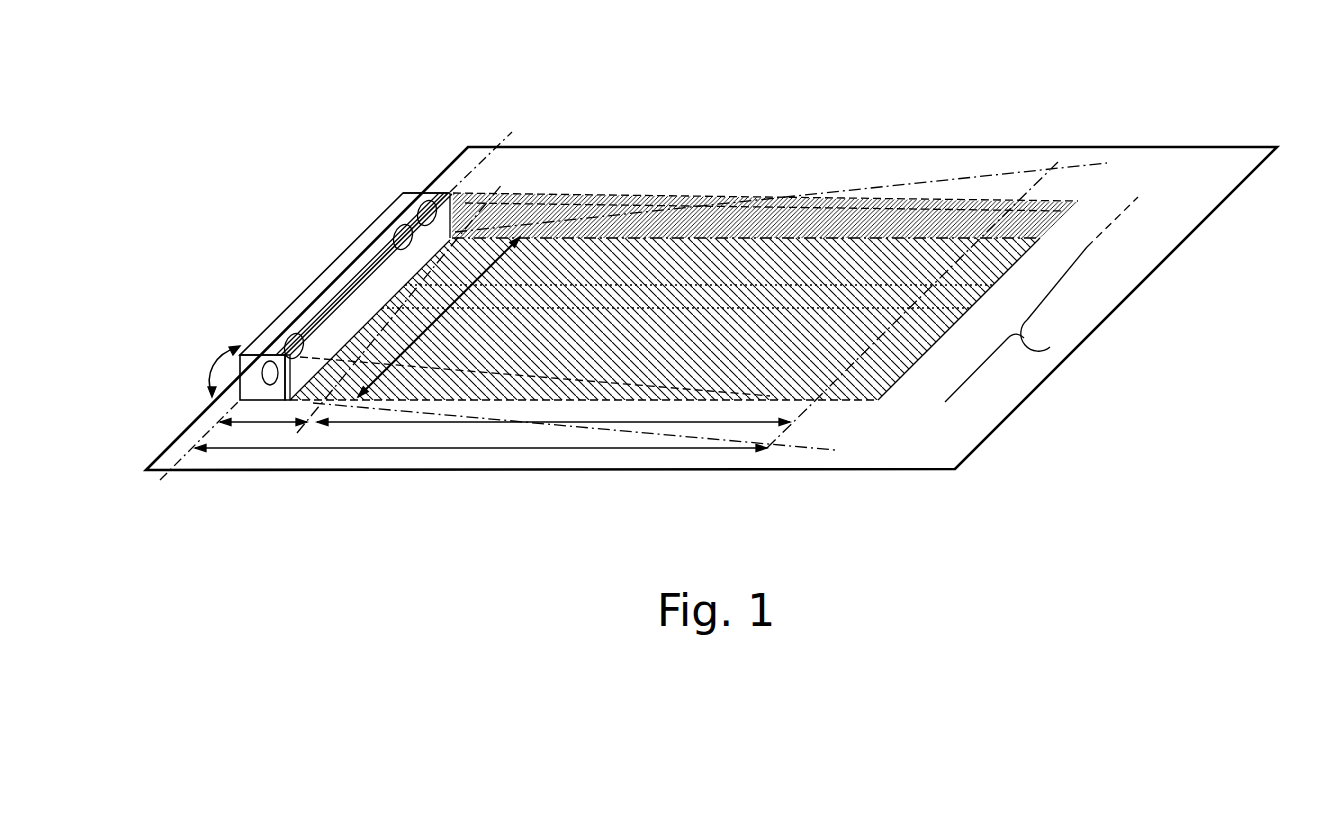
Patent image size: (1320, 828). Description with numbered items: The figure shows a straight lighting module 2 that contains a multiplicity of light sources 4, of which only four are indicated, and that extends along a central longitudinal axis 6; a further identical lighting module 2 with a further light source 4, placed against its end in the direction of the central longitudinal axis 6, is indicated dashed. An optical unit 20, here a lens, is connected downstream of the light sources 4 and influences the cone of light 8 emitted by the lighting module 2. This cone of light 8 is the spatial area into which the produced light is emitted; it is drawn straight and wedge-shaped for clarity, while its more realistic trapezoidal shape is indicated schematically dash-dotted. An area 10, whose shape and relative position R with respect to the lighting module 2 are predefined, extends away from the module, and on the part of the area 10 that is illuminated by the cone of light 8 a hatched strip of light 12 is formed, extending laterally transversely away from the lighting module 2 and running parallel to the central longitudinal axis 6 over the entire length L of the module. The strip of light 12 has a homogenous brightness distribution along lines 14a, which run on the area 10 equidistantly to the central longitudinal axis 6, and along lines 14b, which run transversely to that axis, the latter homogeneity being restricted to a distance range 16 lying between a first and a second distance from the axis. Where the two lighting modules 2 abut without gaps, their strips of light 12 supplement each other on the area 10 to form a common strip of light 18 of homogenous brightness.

The lighting module 2 is at (425, 170).
The light source 4 is at (400, 225).
The central longitudinal axis 6 is at (500, 145).
The cone of light 8 is at (641, 205).
The area 10 is at (825, 147).
The strip of light 12 is at (1073, 210).
The lines 14a is at (900, 270).
The lines 14b is at (753, 283).
The distance range 16 is at (553, 422).
The common strip of light 18 is at (1050, 347).
The optical unit 20 is at (362, 273).